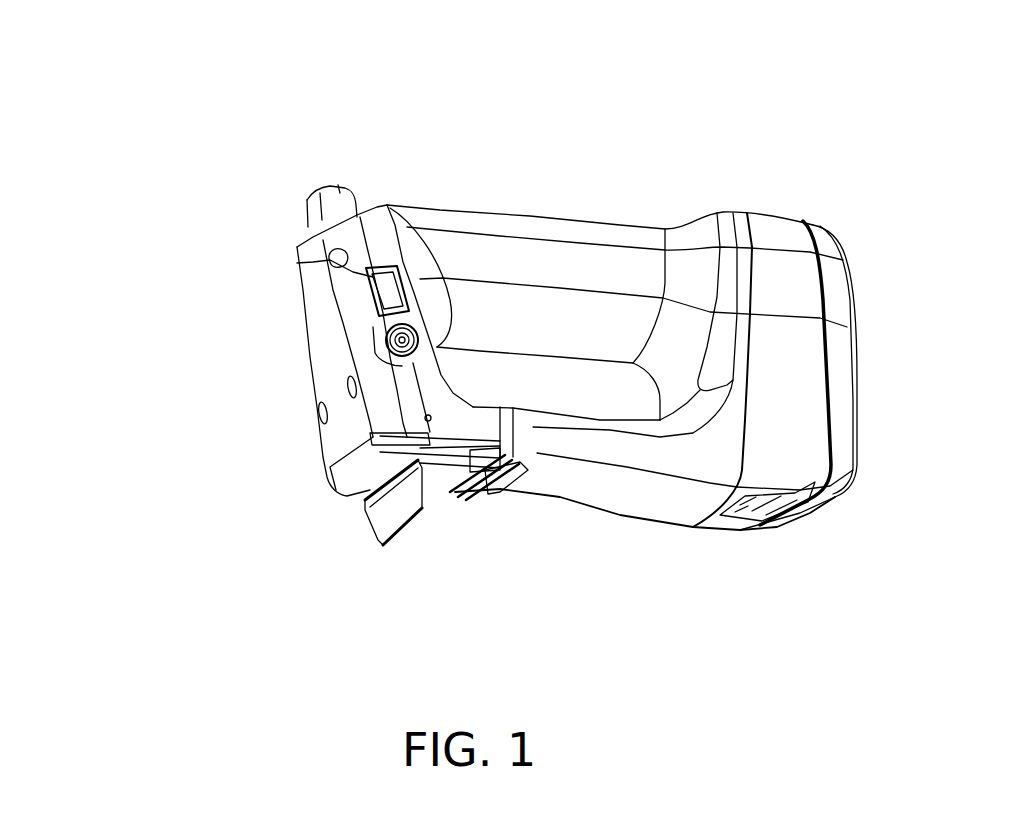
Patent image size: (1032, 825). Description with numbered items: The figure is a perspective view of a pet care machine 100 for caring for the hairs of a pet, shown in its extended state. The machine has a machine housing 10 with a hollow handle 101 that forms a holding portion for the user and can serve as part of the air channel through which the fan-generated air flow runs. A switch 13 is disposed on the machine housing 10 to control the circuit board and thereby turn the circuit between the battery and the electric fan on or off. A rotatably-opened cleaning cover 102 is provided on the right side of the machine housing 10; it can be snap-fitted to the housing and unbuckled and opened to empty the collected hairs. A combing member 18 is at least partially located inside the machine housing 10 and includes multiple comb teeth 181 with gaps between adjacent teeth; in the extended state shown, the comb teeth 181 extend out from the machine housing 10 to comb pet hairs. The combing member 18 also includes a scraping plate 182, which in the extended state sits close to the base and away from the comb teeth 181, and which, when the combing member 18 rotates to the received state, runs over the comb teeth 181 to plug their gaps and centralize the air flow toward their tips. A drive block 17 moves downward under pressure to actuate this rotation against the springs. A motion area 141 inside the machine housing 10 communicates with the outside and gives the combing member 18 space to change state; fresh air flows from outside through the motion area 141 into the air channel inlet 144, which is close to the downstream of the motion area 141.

The pet care machine 100 is at (150, 97).
The handle 101 is at (533, 215).
The cleaning cover 102 is at (840, 297).
The machine housing 10 is at (660, 490).
The switch 13 is at (330, 262).
The drive block 17 is at (340, 197).
The combing member 18 is at (240, 510).
The comb teeth 181 is at (407, 527).
The scraping plate 182 is at (363, 500).
The motion area 141 is at (457, 498).
The air channel inlet 144 is at (493, 493).